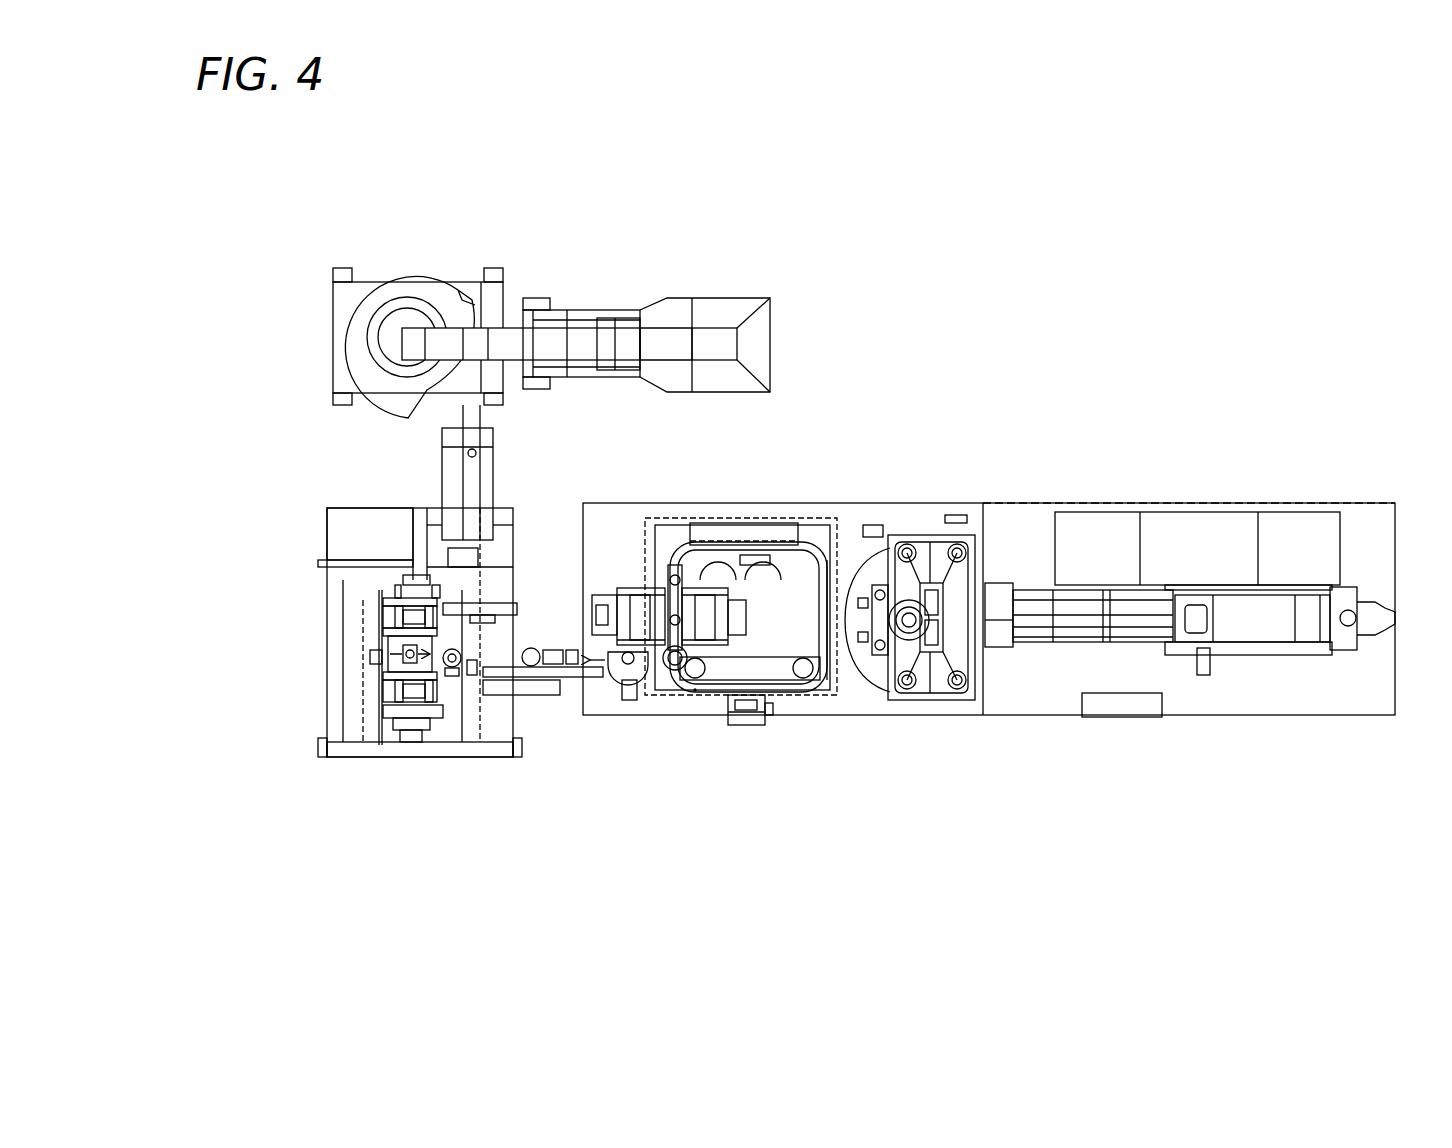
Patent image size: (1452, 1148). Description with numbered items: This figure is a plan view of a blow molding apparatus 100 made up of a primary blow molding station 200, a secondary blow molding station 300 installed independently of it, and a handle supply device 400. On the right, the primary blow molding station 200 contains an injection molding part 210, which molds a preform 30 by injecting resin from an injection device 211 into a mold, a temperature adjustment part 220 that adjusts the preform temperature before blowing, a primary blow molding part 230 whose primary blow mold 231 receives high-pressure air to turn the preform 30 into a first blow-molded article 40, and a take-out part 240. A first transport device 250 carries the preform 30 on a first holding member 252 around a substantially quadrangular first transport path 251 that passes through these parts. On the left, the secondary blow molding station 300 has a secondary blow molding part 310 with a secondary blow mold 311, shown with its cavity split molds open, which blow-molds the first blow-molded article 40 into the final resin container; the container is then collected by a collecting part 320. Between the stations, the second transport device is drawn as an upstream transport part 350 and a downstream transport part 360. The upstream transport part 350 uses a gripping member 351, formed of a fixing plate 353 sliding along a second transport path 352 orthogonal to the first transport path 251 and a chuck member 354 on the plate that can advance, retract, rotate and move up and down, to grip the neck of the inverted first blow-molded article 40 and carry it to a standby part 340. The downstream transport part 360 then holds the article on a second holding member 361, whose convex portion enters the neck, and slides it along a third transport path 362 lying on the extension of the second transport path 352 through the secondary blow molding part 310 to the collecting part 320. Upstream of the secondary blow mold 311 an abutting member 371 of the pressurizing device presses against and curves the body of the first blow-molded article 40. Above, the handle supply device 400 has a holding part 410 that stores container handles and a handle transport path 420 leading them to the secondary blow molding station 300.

The blow molding apparatus 100 is at (1198, 310).
The primary blow molding station 200 is at (832, 878).
The injection molding part 210 is at (915, 527).
The injection device 211 is at (1038, 617).
The temperature adjustment part 220 is at (770, 530).
The primary blow molding part 230 is at (635, 565).
The primary blow mold 231 is at (657, 588).
The take-out part 240 is at (752, 725).
The first transport device 250 is at (715, 705).
The first transport path 251 is at (810, 695).
The first holding member 252 is at (785, 700).
The preform 30 is at (830, 683).
The first blow-molded article 40 is at (538, 650).
The secondary blow molding station 300 is at (388, 880).
The secondary blow molding part 310 is at (398, 768).
The secondary blow mold 311 is at (377, 618).
The collecting part 320 is at (350, 768).
The standby part 340 is at (448, 768).
The upstream transport part 350 is at (572, 822).
The gripping member 351 is at (658, 777).
The second transport path 352 is at (522, 695).
The fixing plate 353 is at (612, 698).
The chuck member 354 is at (642, 698).
The downstream transport part 360 is at (307, 657).
The second holding member 361 is at (452, 650).
The third transport path 362 is at (365, 665).
The abutting member 371 is at (460, 668).
The handle supply device 400 is at (397, 225).
The holding part 410 is at (350, 338).
The handle transport path 420 is at (470, 472).